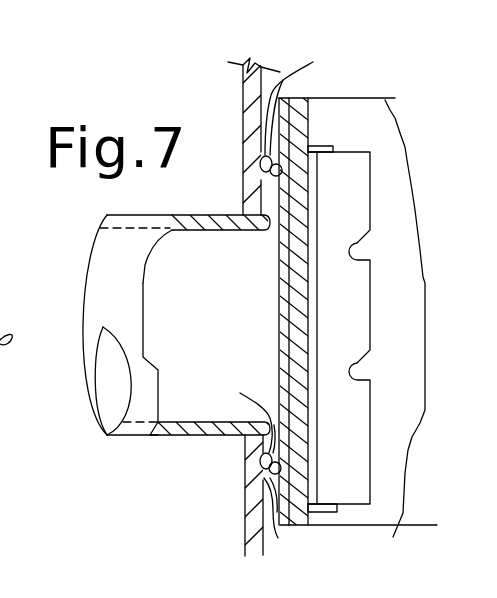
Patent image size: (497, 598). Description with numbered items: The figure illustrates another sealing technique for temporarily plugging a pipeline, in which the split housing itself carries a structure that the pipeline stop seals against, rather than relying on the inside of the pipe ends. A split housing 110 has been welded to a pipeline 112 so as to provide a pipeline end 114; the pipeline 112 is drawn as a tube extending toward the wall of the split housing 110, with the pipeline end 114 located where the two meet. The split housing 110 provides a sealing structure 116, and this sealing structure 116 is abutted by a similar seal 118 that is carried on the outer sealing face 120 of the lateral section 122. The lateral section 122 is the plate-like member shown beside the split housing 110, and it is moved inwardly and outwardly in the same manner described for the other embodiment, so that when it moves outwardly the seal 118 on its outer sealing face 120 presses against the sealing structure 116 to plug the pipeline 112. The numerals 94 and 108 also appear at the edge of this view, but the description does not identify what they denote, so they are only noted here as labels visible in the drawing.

The connector 94 is at (12, 363).
The assembly 108 is at (101, 6).
The split housing 110 is at (240, 499).
The pipeline 112 is at (103, 240).
The pipeline end 114 is at (270, 232).
The sealing structure 116 is at (313, 558).
The seal 118 is at (234, 425).
The outer sealing face 120 is at (307, 97).
The lateral section 122 is at (407, 135).